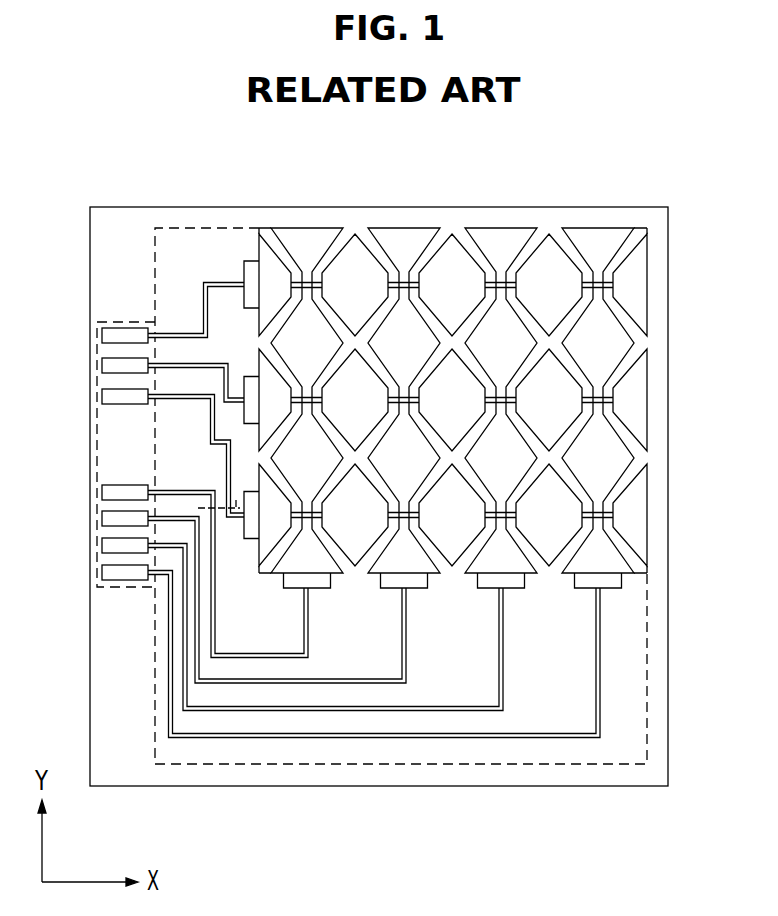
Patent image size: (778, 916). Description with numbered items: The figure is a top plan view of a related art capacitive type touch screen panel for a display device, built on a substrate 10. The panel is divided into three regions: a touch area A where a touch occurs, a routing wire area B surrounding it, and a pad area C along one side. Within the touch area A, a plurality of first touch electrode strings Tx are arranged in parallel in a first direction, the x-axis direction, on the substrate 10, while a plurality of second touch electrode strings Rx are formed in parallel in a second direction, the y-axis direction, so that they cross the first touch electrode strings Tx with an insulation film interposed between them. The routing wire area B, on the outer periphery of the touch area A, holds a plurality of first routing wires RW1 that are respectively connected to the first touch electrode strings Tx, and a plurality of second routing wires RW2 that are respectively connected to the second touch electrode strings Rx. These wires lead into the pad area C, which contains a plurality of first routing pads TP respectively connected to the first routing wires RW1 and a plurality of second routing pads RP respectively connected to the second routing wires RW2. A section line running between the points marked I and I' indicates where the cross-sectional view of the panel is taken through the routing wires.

The substrate 10 is at (601, 779).
The touch area A is at (484, 364).
The routing wire area B is at (211, 210).
The pad area C is at (124, 306).
The first touch electrode strings Tx is at (662, 284).
The second touch electrode strings Rx is at (602, 210).
The first routing pads TP is at (85, 325).
The second routing pads RP is at (85, 483).
The first routing wires RW1 is at (180, 299).
The second routing wires RW2 is at (254, 750).
The section line I-I' I is at (219, 477).
The section line I- I' is at (239, 476).